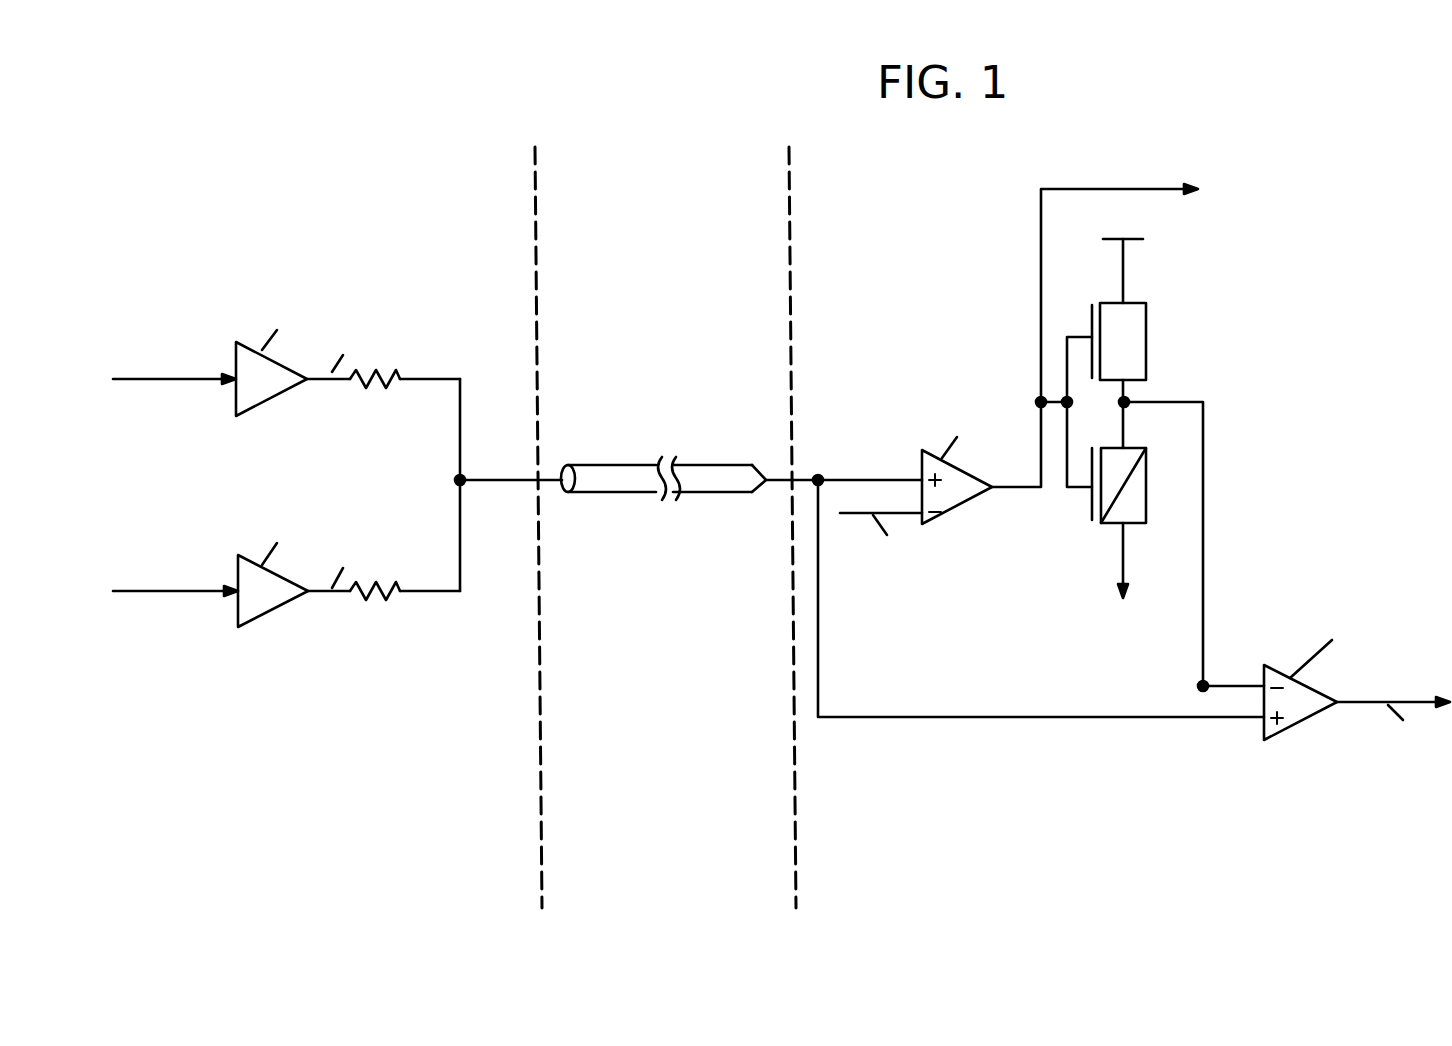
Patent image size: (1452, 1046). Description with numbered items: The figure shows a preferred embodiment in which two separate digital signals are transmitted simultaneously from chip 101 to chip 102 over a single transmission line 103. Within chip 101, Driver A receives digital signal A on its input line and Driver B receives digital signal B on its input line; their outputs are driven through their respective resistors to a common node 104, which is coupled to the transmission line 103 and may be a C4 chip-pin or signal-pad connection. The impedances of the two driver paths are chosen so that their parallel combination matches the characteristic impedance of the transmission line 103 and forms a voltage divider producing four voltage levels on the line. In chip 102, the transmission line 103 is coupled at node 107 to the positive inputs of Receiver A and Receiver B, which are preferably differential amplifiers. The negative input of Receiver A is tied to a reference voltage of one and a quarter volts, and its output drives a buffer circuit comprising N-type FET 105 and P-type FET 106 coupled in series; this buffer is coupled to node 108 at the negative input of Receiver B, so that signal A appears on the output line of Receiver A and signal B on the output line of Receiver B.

The chip 101 is at (337, 538).
The chip 102 is at (1131, 504).
The transmission line 103 is at (723, 463).
The common node 104 is at (465, 473).
The N-type FET 105 is at (1146, 318).
The P-type FET 106 is at (1118, 523).
The node 107 is at (823, 474).
The node 108 is at (1195, 684).